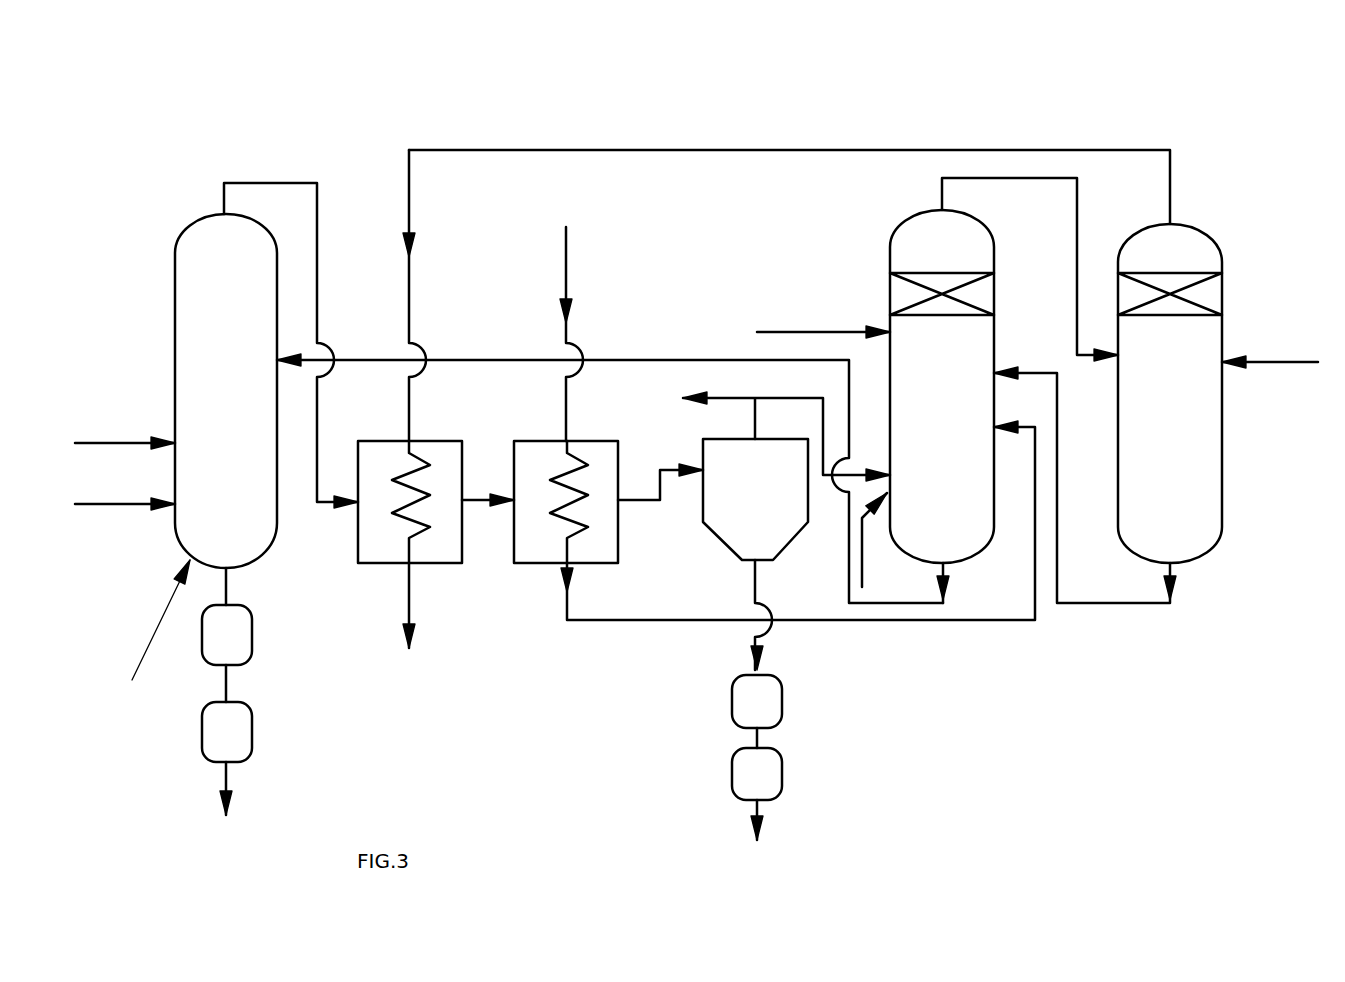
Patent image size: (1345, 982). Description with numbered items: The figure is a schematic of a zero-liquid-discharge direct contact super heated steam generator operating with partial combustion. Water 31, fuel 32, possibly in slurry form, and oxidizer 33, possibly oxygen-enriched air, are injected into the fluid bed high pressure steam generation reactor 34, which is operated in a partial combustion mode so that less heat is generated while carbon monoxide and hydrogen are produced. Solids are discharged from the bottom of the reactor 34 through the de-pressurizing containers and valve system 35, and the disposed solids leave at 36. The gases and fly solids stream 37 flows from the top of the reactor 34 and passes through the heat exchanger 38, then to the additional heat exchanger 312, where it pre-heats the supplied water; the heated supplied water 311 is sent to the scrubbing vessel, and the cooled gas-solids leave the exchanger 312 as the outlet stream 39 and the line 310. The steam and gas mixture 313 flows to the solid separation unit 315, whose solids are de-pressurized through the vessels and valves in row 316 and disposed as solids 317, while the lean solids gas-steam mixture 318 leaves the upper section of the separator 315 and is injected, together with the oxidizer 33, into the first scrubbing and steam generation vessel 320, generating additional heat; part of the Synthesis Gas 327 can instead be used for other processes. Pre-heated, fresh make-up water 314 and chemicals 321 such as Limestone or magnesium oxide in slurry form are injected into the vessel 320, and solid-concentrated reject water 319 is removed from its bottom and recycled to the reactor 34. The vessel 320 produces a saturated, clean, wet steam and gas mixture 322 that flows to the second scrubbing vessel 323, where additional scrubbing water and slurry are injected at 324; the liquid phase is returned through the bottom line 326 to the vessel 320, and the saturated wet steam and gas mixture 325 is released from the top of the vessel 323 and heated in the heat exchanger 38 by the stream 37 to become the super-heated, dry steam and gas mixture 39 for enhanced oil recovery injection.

The water 31 is at (125, 430).
The fuel 32 is at (125, 490).
The oxidizer 33 is at (862, 565).
The fluid bed high pressure steam generation reactor 34 is at (250, 538).
The de-pressurizing containers and valve system 35 is at (242, 735).
The outlet stream 36 is at (227, 773).
The gases and fly solids stream 37 is at (250, 183).
The heat exchanger 38 is at (433, 550).
The superheated dry steam/gas mixture for injection 39 is at (415, 613).
The recycle line 310 is at (709, 150).
The heated supplied water 311 is at (566, 317).
The additional heat exchanger 312 is at (533, 450).
The steam and gas mixture 313 is at (643, 497).
The pre-heated fresh make-up water 314 is at (618, 622).
The solid separation unit 315 is at (742, 550).
The vessels and valves in row 316 is at (773, 772).
The solids 317 is at (762, 807).
The lean solids gas-steam mixture 318 is at (783, 395).
The solid-concentrated reject water 319 is at (913, 605).
The first scrubbing and steam generation vessel 320 is at (963, 540).
The chemicals 321 is at (823, 318).
The saturated clean wet steam and gas mixture 322 is at (968, 178).
The second scrubbing vessel 323 is at (1210, 492).
The additional scrubbing water and slurry injection 324 is at (1270, 351).
The saturated wet steam and gas mixture 325 is at (1170, 187).
The bottom line 326 is at (1113, 607).
The Synthesis Gas portion 327 is at (711, 385).